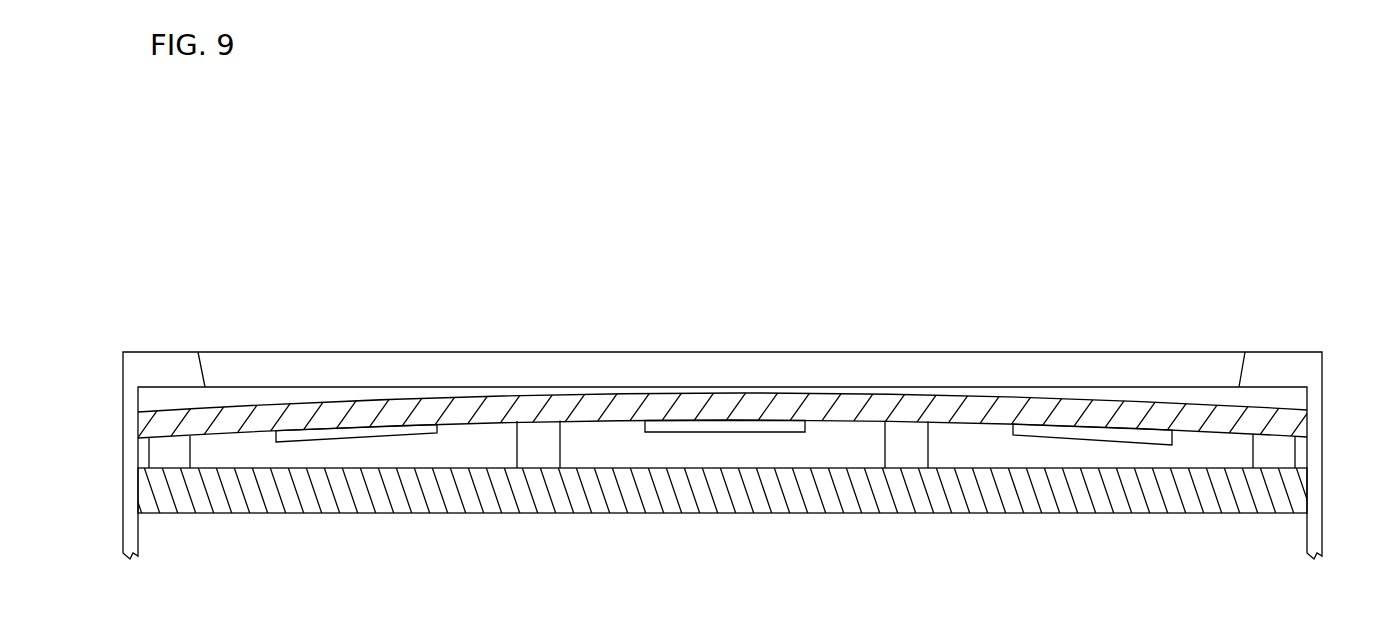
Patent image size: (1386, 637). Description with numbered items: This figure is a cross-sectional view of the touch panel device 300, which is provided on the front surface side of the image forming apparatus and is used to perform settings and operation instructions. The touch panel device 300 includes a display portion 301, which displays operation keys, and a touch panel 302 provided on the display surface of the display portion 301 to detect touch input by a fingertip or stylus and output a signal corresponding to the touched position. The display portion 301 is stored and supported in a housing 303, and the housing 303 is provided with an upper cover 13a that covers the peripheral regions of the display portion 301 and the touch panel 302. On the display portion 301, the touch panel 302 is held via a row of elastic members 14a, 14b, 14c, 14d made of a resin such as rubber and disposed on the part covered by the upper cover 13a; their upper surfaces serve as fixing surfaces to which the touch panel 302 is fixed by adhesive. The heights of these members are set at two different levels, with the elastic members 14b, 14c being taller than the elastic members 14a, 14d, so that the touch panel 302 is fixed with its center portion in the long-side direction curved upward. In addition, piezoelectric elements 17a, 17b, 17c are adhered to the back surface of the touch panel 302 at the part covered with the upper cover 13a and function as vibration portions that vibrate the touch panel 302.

The touch panel device 300 is at (970, 278).
The display portion 301 is at (818, 513).
The touch panel 302 is at (905, 405).
The housing 303 is at (1313, 400).
The upper cover 13a is at (160, 352).
The elastic member 14a is at (150, 452).
The elastic member 14b is at (547, 437).
The elastic member 14c is at (915, 438).
The elastic member 14d is at (1297, 452).
The piezoelectric element 17a is at (400, 438).
The piezoelectric element 17b is at (780, 430).
The piezoelectric element 17c is at (1160, 438).